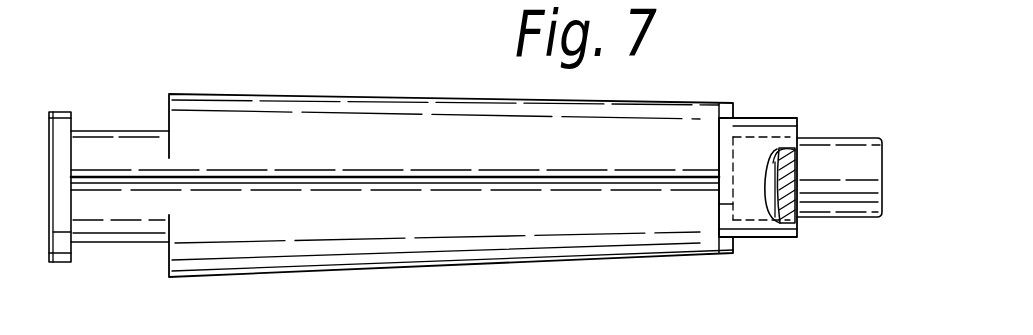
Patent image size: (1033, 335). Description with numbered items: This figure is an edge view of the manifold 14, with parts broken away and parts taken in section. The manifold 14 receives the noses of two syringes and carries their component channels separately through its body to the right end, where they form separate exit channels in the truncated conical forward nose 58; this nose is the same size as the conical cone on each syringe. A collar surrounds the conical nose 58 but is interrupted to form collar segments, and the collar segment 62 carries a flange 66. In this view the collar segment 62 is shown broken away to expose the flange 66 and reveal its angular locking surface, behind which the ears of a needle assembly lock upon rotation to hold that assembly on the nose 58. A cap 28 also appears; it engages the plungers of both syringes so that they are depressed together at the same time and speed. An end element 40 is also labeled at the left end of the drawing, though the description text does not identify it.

The manifold 14 is at (380, 266).
The end flange 40 is at (62, 263).
The collar segment 62 is at (753, 240).
The cap 28 is at (797, 135).
The flange 66 is at (798, 172).
The truncated conical forward nose 58 is at (838, 211).